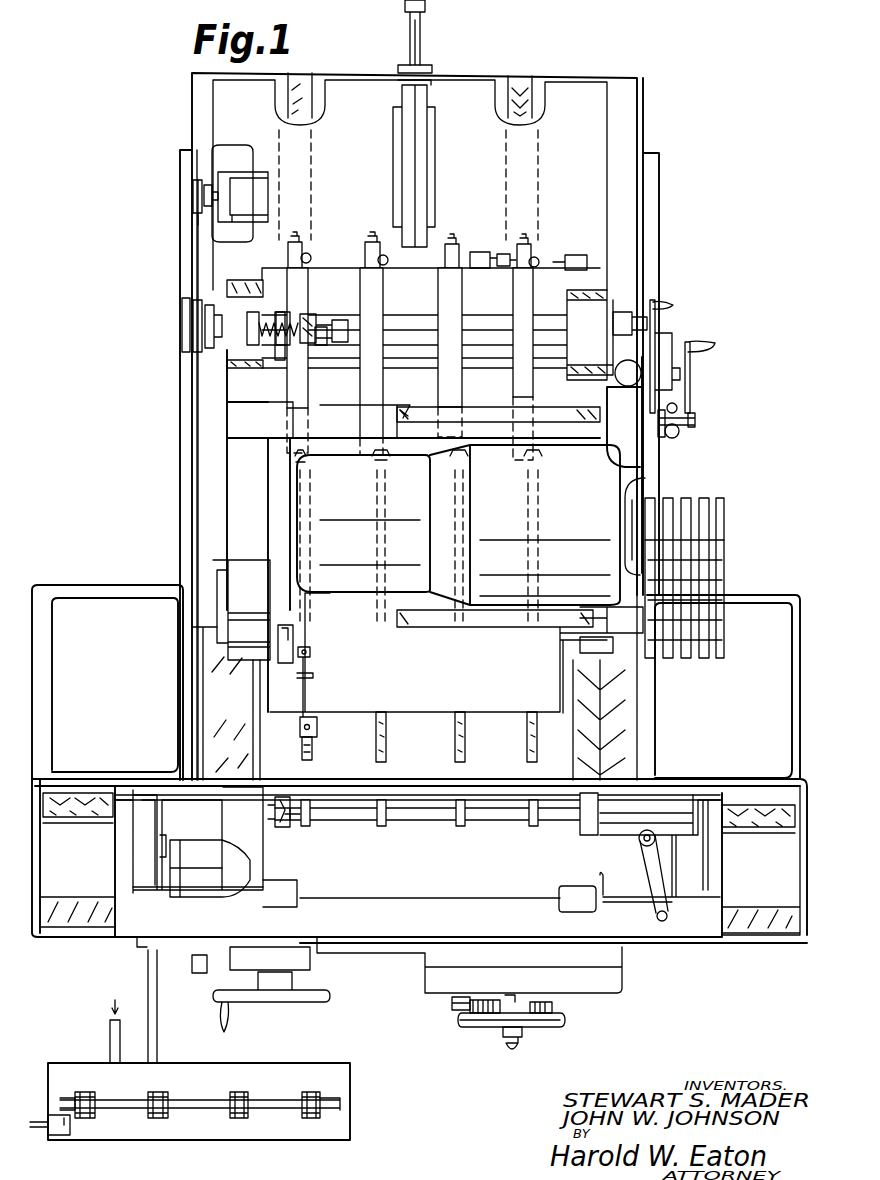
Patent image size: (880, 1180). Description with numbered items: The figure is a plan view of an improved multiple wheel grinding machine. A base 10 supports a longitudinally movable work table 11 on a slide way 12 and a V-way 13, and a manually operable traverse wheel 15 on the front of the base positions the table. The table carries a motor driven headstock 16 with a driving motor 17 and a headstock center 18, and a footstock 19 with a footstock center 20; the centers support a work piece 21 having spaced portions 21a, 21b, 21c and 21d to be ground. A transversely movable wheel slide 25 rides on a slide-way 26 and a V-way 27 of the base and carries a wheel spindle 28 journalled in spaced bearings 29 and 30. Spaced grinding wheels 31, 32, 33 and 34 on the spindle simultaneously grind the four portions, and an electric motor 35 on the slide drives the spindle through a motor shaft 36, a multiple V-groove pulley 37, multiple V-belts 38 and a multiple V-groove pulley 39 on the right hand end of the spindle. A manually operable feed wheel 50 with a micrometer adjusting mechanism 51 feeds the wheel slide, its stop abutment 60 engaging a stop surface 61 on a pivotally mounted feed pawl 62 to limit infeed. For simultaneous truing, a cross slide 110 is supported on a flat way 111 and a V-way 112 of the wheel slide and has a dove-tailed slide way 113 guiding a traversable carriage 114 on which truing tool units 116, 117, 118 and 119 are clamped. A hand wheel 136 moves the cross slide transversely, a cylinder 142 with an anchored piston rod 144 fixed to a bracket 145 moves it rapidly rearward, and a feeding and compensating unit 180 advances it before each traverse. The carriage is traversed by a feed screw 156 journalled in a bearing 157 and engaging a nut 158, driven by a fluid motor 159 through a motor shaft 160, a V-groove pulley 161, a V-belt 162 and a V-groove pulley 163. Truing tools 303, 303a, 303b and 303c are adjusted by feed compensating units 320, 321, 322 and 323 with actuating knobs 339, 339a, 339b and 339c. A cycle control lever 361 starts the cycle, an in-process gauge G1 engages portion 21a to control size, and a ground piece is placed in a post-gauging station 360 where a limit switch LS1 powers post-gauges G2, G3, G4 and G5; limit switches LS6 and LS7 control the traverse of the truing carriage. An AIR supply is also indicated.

The base 10 is at (88, 593).
The work table 11 is at (362, 928).
The slide way 12 is at (76, 905).
The V-way 13 is at (92, 800).
The traverse wheel 15 is at (318, 1002).
The headstock 16 is at (179, 812).
The driving motor 17 is at (200, 880).
The headstock center 18 is at (280, 797).
The footstock 19 is at (646, 910).
The footstock center 20 is at (566, 825).
The work piece 21 is at (429, 828).
The spaced portion 21a is at (306, 828).
The spaced portion 21b is at (382, 828).
The spaced portion 21c is at (462, 828).
The spaced portion 21d is at (534, 828).
The wheel slide 25 is at (182, 101).
The slide-way 26 is at (207, 686).
The V-way 27 is at (630, 730).
The wheel spindle 28 is at (633, 610).
The bearing 29 is at (240, 598).
The bearing 30 is at (610, 648).
The grinding wheel 31 is at (311, 750).
The grinding wheel 32 is at (388, 750).
The grinding wheel 33 is at (466, 750).
The grinding wheel 34 is at (538, 752).
The electric motor 35 is at (617, 478).
The motor shaft 36 is at (642, 498).
The multiple V-groove pulley 37 is at (718, 505).
The multiple V-belts 38 is at (705, 556).
The multiple V-groove pulley 39 is at (724, 636).
The feed wheel 50 is at (546, 1027).
The micrometer adjusting mechanism 51 is at (505, 1040).
The stop abutment 60 is at (490, 1002).
The stop surface 61 is at (466, 1022).
The feed pawl 62 is at (452, 1005).
The cross slide 110 is at (238, 402).
The flat way 111 is at (298, 85).
The V-way 112 is at (526, 85).
The dove-tailed slide way 113 is at (588, 370).
The carriage 114 is at (272, 380).
The truing tool unit 116 is at (310, 295).
The truing tool unit 117 is at (364, 307).
The truing tool unit 118 is at (433, 295).
The truing tool unit 119 is at (511, 300).
The hand wheel 136 is at (660, 315).
The cylinder 142 is at (418, 152).
The piston rod 144 is at (408, 28).
The bracket 145 is at (424, 28).
The feed screw 156 is at (250, 320).
The bearing 157 is at (188, 298).
The nut 158 is at (250, 300).
The fluid motor 159 is at (240, 185).
The motor shaft 160 is at (193, 186).
The V-groove pulley 161 is at (204, 193).
The V-belt 162 is at (198, 220).
The V-groove pulley 163 is at (195, 315).
The feeding and compensating unit 180 is at (688, 432).
The truing tool 303 is at (292, 468).
The truing tool 303a is at (368, 462).
The truing tool 303b is at (445, 465).
The truing tool 303c is at (528, 460).
The feed compensating unit 320 is at (300, 248).
The feed compensating unit 321 is at (377, 231).
The feed compensating unit 322 is at (456, 234).
The feed compensating unit 323 is at (537, 238).
The actuating knob 339 is at (312, 259).
The actuating knob 339a is at (388, 261).
The actuating knob 339b is at (448, 322).
The actuating knob 339c is at (552, 256).
The post-gauging station 360 is at (358, 1099).
The cycle control lever 361 is at (197, 973).
The air supply inlet AIR is at (112, 999).
The in-process gauge G1 is at (316, 727).
The post-gauge G2 is at (86, 1092).
The post-gauge G3 is at (158, 1092).
The post-gauge G4 is at (239, 1092).
The post-gauge G5 is at (311, 1092).
The limit switch LS1 is at (58, 1136).
The limit switch LS6 is at (478, 262).
The limit switch LS7 is at (578, 262).